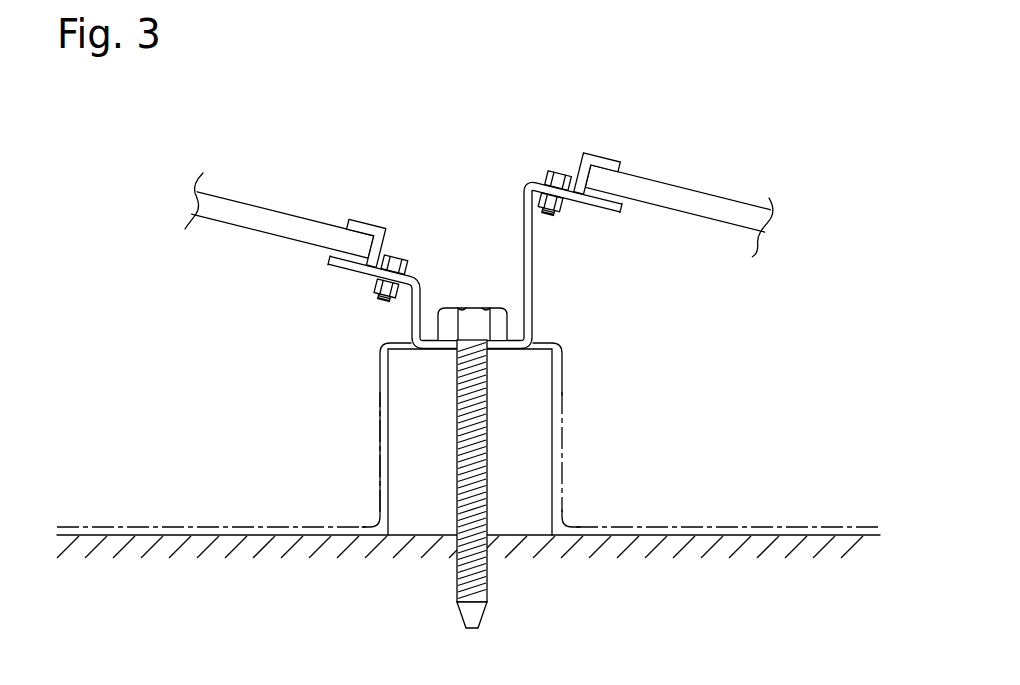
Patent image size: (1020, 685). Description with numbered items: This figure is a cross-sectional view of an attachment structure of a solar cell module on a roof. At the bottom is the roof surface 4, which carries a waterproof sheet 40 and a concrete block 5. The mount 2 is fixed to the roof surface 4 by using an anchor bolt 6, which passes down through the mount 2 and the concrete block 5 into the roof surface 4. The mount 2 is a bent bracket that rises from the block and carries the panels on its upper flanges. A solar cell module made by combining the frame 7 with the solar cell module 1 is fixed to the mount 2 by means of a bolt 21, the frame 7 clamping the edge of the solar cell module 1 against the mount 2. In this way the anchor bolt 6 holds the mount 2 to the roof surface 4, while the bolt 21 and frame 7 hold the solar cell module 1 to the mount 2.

The solar cell module 1 is at (688, 202).
The mount 2 is at (535, 279).
The bolt 21 is at (402, 254).
The frame 7 is at (610, 163).
The roof surface 4 is at (195, 538).
The waterproof sheet 40 is at (302, 525).
The concrete block 5 is at (533, 468).
The anchor bolt 6 is at (487, 407).